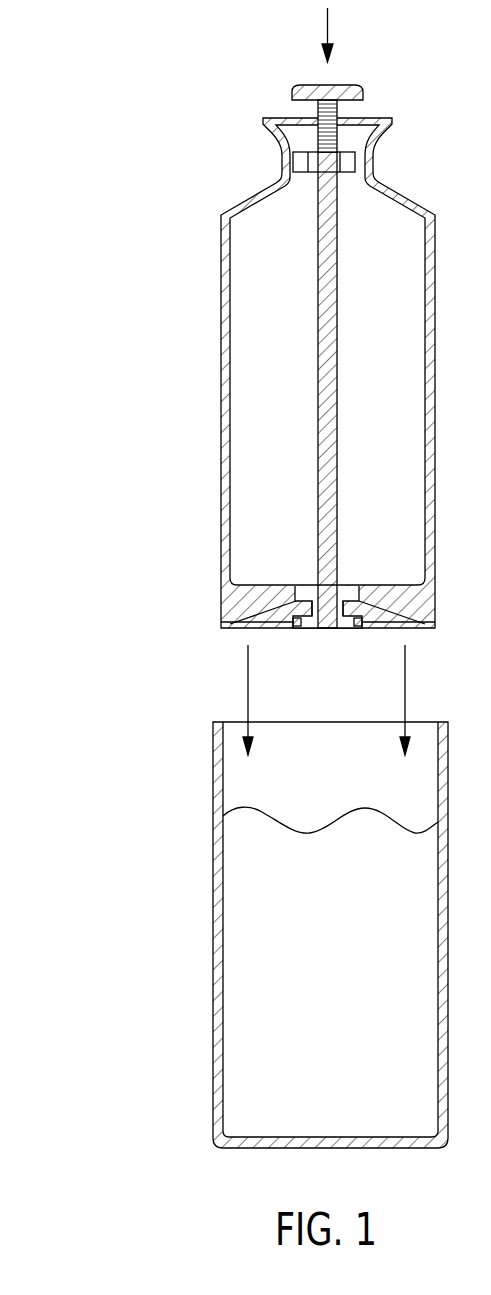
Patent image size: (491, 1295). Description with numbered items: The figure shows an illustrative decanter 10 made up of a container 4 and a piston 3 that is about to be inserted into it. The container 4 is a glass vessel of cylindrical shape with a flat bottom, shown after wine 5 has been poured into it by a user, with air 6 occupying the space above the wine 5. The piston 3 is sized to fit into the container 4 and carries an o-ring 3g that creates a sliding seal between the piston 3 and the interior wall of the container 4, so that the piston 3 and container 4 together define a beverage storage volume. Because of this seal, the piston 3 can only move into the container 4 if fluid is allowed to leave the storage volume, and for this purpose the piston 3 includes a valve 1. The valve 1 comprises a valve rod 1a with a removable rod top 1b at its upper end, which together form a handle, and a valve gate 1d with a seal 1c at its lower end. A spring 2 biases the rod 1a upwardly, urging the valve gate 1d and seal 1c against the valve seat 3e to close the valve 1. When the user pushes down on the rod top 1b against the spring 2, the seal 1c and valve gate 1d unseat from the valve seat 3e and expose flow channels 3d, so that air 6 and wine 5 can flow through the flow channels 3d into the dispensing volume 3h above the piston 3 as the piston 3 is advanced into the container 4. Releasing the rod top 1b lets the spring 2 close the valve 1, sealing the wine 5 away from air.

The decanter 10 is at (114, 104).
The valve 1 is at (352, 568).
The valve rod 1a is at (317, 297).
The rod top 1b is at (312, 85).
The seal 1c is at (297, 624).
The valve gate 1d is at (337, 620).
The spring 2 is at (318, 142).
The piston 3 is at (220, 372).
The flow channels 3d is at (300, 586).
The valve seat 3e is at (380, 594).
The o-ring 3g is at (225, 622).
The dispensing volume 3h is at (243, 423).
The container 4 is at (212, 922).
The wine 5 is at (258, 808).
The air 6 is at (302, 745).